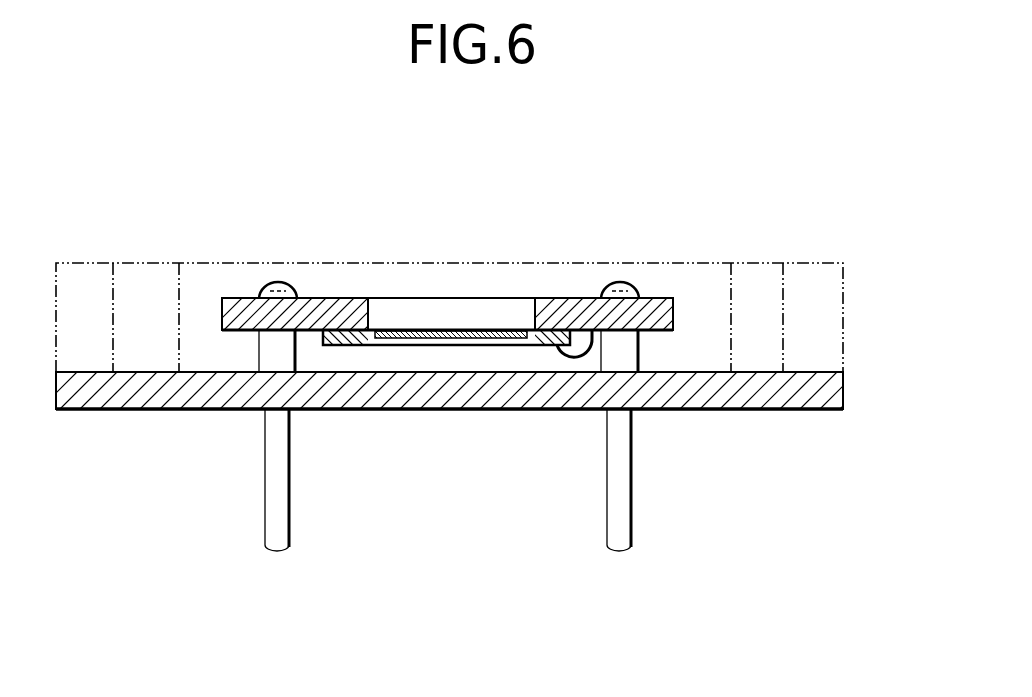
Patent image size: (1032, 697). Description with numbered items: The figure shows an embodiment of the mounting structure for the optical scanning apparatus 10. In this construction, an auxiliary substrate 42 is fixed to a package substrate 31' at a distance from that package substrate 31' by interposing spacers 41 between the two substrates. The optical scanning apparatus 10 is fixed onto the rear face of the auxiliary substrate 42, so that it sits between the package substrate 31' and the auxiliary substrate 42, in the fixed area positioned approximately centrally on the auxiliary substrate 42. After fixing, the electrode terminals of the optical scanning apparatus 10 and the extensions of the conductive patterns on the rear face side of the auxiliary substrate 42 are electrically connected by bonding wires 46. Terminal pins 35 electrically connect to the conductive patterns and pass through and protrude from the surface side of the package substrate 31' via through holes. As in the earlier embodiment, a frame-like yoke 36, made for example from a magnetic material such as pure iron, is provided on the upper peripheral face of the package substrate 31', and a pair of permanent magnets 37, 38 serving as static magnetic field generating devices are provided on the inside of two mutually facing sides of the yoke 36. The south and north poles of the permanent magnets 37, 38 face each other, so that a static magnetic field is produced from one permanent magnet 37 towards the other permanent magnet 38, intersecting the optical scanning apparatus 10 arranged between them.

The optical scanning apparatus 10 is at (453, 349).
The package substrate 31' is at (448, 458).
The terminal pins 35 is at (277, 508).
The frame-like yoke 36 is at (817, 303).
The permanent magnet 37 is at (142, 297).
The permanent magnet 38 is at (753, 297).
The spacers 41 is at (272, 347).
The auxiliary substrate 42 is at (568, 297).
The bonding wires 46 is at (572, 352).